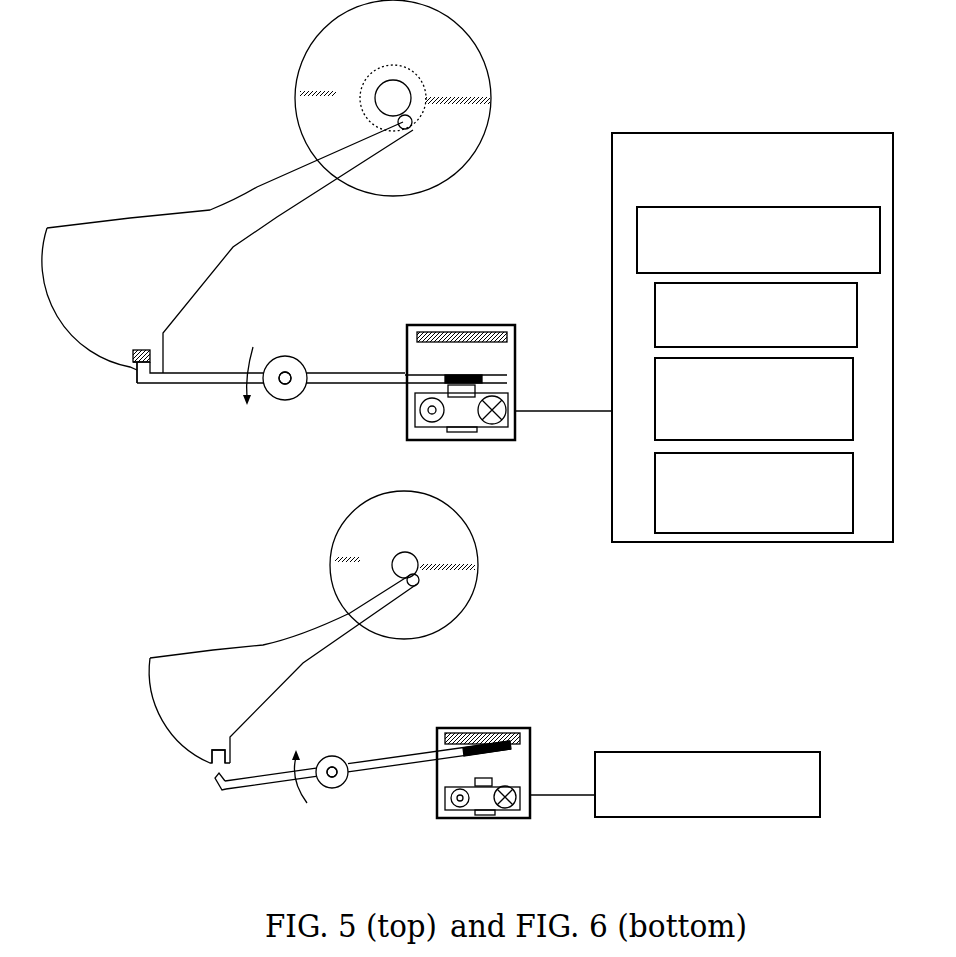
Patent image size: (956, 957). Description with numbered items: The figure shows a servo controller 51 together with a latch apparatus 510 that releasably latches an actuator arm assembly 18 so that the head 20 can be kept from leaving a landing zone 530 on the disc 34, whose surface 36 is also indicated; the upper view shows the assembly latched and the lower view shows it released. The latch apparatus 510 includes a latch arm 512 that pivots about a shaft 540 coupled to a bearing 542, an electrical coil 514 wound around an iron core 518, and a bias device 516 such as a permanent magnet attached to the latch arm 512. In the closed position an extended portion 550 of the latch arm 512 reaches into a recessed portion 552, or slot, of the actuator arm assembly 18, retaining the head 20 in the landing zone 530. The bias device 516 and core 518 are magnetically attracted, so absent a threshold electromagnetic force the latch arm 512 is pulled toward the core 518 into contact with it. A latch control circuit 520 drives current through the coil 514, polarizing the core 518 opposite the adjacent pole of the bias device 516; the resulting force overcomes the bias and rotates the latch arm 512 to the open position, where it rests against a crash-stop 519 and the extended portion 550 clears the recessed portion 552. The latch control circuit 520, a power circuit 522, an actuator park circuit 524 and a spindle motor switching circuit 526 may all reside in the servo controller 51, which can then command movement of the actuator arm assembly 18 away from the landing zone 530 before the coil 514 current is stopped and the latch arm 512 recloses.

In FIG. 5, the actuator arm assembly 18 is at (130, 217).
In FIG. 6, the actuator arm assembly 18 is at (217, 647).
In FIG. 5, the head 20 is at (409, 128).
In FIG. 6, the head 20 is at (417, 585).
In FIG. 5, the disc 34 is at (490, 68).
In FIG. 6, the disc 34 is at (453, 509).
In FIG. 5, the disc hub / data zone 36 is at (472, 130).
In FIG. 6, the disc hub / data zone 36 is at (463, 551).
In FIG. 5, the servo controller 51 is at (750, 189).
In FIG. 6, the servo controller 51 is at (699, 805).
In FIG. 5, the latch apparatus 510 is at (508, 365).
In FIG. 5, the latch arm 512 is at (177, 372).
In FIG. 6, the latch arm 512 is at (245, 776).
In FIG. 5, the electrical coil 514 is at (480, 428).
In FIG. 6, the electrical coil 514 is at (500, 812).
In FIG. 5, the bias device 516 is at (455, 374).
In FIG. 6, the bias device 516 is at (483, 750).
In FIG. 5, the iron core 518 is at (475, 389).
In FIG. 6, the iron core 518 is at (492, 781).
In FIG. 5, the crash-stop 519 is at (498, 328).
In FIG. 6, the crash-stop 519 is at (508, 733).
In FIG. 5, the latch control circuit 520 is at (746, 261).
In FIG. 5, the power circuit 522 is at (742, 337).
In FIG. 5, the actuator park circuit 524 is at (742, 431).
In FIG. 5, the spindle motor switching circuit 526 is at (742, 522).
In FIG. 5, the landing zone 530 is at (397, 73).
In FIG. 5, the shaft 540 is at (297, 364).
In FIG. 6, the shaft 540 is at (341, 761).
In FIG. 5, the bearing 542 is at (305, 392).
In FIG. 6, the bearing 542 is at (343, 786).
In FIG. 5, the extended portion 550 is at (137, 380).
In FIG. 6, the extended portion 550 is at (218, 787).
In FIG. 5, the recessed portion 552 is at (140, 350).
In FIG. 6, the recessed portion 552 is at (215, 747).